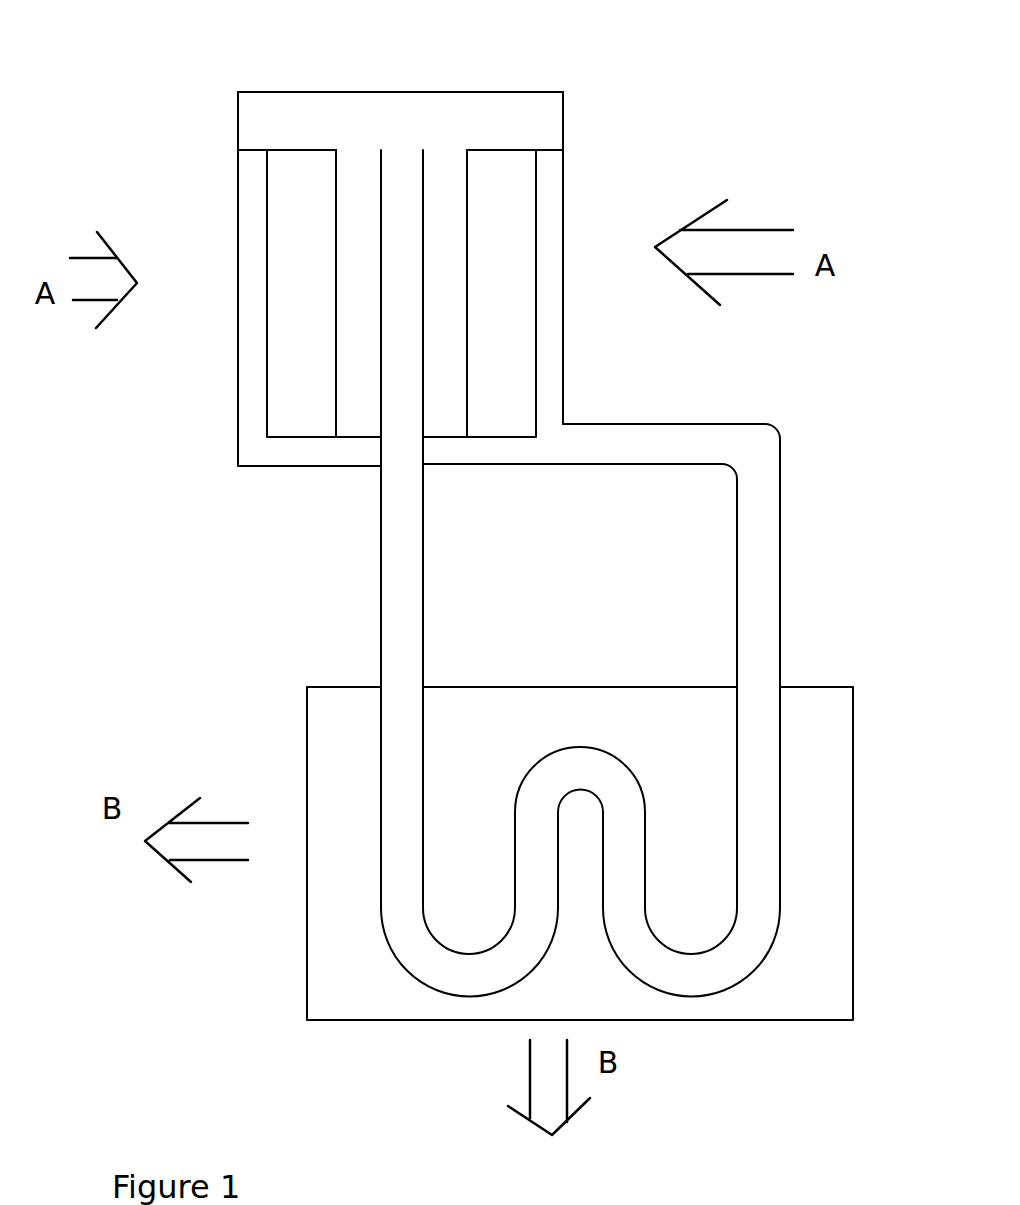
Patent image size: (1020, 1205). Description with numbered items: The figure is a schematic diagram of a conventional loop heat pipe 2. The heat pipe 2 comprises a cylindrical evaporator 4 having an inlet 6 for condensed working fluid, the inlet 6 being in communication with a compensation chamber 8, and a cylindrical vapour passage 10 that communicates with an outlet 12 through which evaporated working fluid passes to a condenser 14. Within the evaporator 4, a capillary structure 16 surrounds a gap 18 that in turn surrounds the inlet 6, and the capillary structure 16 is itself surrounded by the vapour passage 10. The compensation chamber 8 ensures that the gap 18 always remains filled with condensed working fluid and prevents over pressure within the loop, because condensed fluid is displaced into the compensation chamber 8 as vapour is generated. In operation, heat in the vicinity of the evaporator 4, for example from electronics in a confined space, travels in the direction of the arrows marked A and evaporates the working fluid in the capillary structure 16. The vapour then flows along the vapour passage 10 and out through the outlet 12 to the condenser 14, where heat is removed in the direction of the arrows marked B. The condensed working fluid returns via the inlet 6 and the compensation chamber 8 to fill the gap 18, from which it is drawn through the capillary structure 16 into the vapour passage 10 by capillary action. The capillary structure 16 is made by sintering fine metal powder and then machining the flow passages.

The heat pipe 2 is at (198, 668).
The cylindrical evaporator 4 is at (237, 220).
The inlet 6 is at (403, 542).
The compensation chamber 8 is at (317, 117).
The cylindrical vapour passage 10 is at (238, 404).
The outlet 12 is at (760, 547).
The condenser 14 is at (307, 932).
The capillary structure 16 is at (508, 208).
The gap 18 is at (357, 328).